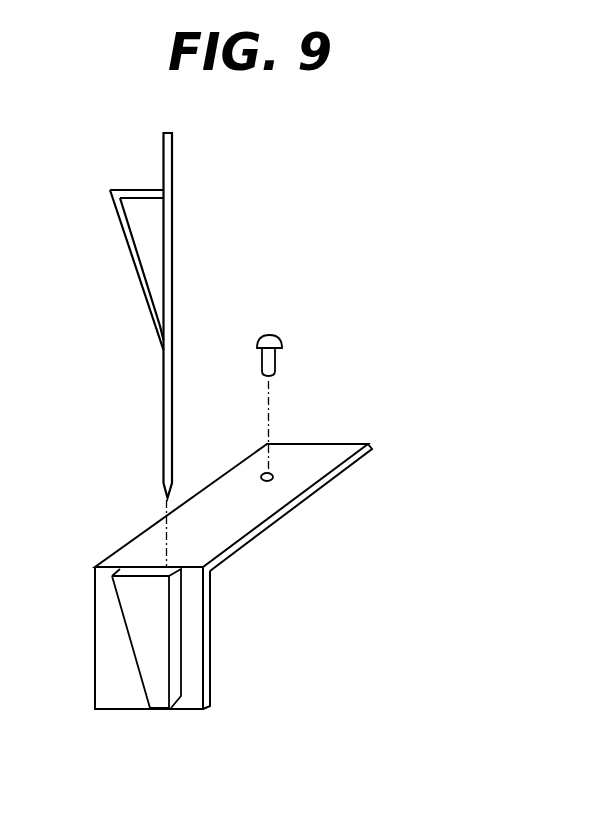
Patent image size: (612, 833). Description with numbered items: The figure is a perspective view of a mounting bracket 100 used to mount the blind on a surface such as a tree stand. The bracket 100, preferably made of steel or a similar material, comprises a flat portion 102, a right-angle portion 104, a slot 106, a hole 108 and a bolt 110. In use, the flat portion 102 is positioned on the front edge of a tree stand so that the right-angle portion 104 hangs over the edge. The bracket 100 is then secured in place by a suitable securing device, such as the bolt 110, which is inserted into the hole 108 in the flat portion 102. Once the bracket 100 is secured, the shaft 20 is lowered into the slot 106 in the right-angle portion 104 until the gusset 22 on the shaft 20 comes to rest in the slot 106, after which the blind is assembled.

The shaft 20 is at (172, 161).
The gusset 22 is at (131, 253).
The mounting bracket 100 is at (279, 539).
The flat portion 102 is at (247, 519).
The right-angle portion 104 is at (193, 662).
The slot 106 is at (150, 675).
The hole 108 is at (273, 477).
The bolt 110 is at (272, 358).